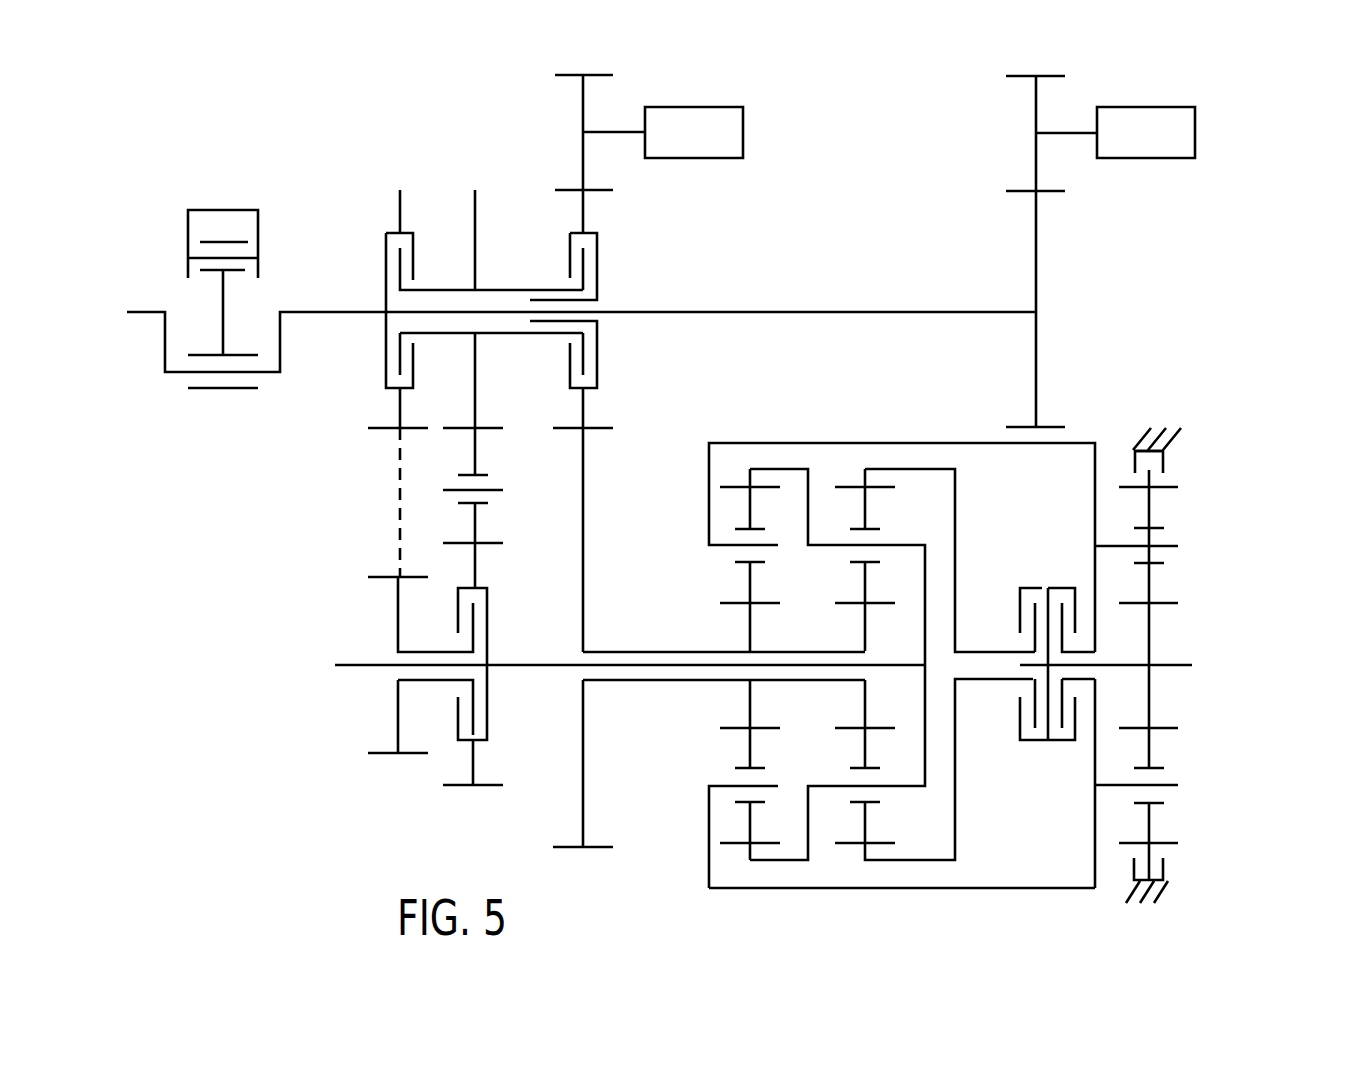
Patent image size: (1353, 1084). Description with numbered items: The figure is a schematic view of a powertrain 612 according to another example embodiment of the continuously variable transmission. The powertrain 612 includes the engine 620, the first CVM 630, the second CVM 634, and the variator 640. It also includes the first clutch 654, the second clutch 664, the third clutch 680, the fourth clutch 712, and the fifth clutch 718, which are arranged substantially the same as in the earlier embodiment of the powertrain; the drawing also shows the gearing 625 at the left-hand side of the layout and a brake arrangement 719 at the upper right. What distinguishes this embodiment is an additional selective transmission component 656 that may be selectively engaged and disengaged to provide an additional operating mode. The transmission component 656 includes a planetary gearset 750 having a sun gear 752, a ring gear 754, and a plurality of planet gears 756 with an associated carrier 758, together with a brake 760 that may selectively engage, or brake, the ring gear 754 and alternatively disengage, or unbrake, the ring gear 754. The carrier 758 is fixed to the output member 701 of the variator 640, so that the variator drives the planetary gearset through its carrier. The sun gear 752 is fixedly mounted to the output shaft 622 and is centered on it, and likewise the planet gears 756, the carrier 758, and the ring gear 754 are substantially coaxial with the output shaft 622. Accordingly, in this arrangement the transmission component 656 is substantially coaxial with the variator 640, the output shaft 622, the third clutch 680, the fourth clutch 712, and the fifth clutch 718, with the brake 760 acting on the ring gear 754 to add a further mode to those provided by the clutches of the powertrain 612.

The powertrain 612 is at (306, 120).
The engine 620 is at (202, 184).
The second clutch 664 is at (372, 271).
The first clutch 654 is at (625, 271).
The second CVM 634 is at (694, 107).
The first CVM 630 is at (1146, 107).
The third clutch 680 is at (511, 603).
The first planetary gear set 625 is at (382, 798).
The variator 640 is at (742, 896).
The output member 701 is at (995, 889).
The fifth clutch 718 is at (1036, 760).
The fourth clutch 712 is at (1063, 760).
The brake assembly 719 is at (1209, 438).
The carrier 758 is at (1123, 546).
The ring gear 754 is at (1152, 472).
The planet gears 756 is at (1151, 512).
The planetary gearset 750 is at (1170, 596).
The sun gear 752 is at (1151, 636).
The output shaft 622 is at (1172, 667).
The transmission component 656 is at (1176, 818).
The brake 760 is at (1170, 880).